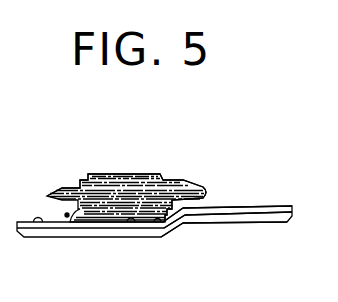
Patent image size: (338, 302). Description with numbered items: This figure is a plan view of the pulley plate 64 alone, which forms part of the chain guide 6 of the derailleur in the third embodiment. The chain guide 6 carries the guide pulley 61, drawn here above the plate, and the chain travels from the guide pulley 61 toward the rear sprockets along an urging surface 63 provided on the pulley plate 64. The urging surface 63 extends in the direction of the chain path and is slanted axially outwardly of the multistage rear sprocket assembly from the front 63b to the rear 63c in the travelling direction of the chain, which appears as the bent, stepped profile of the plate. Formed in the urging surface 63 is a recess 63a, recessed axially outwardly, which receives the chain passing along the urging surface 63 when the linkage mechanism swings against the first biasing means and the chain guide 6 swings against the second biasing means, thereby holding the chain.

The chain guide 6 is at (278, 204).
The pulley plate 64 is at (237, 210).
The guide pulley 61 is at (137, 180).
The urging surface 63 is at (67, 215).
The recess 63a is at (131, 224).
The front 63b is at (43, 225).
The rear 63c is at (168, 230).